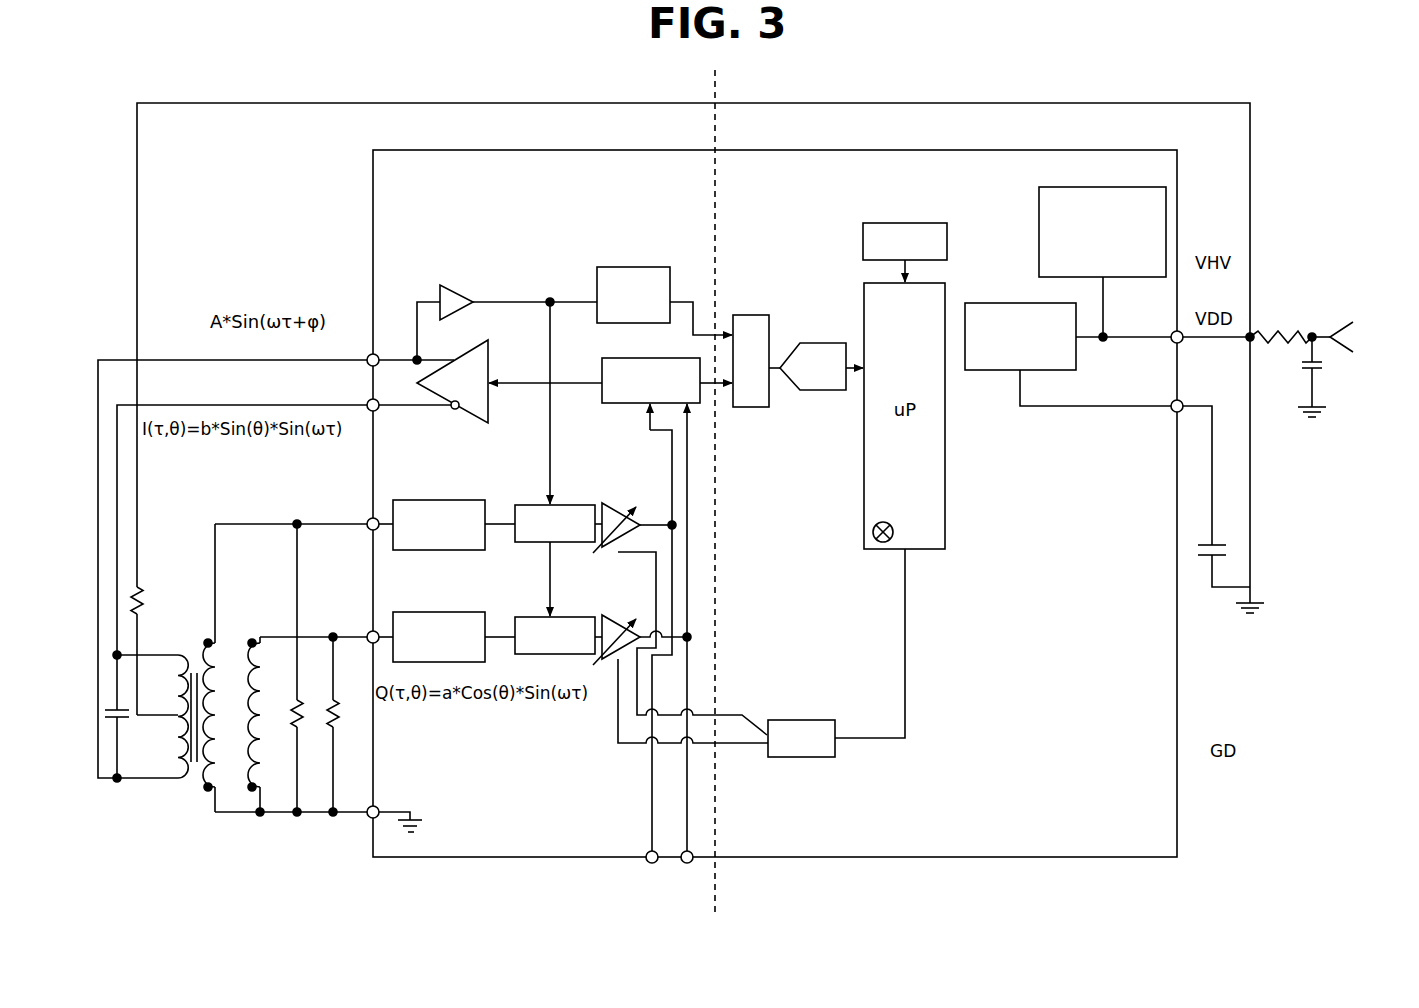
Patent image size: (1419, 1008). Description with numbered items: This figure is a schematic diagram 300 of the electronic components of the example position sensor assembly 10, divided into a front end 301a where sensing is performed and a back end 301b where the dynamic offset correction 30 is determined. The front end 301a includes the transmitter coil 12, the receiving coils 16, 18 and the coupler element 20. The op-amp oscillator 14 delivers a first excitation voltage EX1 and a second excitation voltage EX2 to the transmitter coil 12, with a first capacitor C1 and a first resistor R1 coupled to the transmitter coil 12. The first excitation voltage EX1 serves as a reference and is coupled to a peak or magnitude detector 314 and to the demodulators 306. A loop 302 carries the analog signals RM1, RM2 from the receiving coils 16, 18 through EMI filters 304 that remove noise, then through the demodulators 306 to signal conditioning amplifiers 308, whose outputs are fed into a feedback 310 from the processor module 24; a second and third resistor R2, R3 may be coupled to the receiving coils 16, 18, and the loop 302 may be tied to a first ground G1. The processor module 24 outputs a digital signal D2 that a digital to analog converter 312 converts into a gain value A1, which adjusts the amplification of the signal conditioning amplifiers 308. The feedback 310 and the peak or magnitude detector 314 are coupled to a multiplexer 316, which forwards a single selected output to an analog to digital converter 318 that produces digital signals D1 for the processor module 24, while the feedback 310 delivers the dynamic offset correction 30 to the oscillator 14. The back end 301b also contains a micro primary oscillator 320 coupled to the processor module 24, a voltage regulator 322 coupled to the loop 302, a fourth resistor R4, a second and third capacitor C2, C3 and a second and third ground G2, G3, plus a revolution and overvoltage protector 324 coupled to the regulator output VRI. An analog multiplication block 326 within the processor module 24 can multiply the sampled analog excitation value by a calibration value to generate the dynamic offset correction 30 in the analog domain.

The schematic diagram 300 is at (218, 62).
The position sensor assembly 10 is at (158, 864).
The transmitter coil 12 is at (180, 750).
The op-amp oscillator 14 is at (491, 357).
The first receiving coil 16 is at (219, 736).
The second receiving coil 18 is at (259, 756).
The coupler element 20 is at (195, 766).
The processor module 24 is at (1014, 552).
The dynamic offset correction 30 is at (572, 386).
The front end 301a is at (586, 901).
The back end 301b is at (998, 898).
The loop 302 is at (320, 862).
The electromagnetic interference filters 304 is at (468, 499).
The demodulators 306 is at (530, 504).
The signal conditioning amplifiers 308 is at (616, 503).
The feedback 310 is at (629, 357).
The digital to analog converter 312 is at (803, 758).
The peak or magnitude detector 314 is at (636, 266).
The multiplexer 316 is at (746, 315).
The analog to digital converter 318 is at (806, 343).
The micro primary oscillator 320 is at (913, 222).
The voltage regulator 322 is at (1018, 302).
The revolution and overvoltage protector 324 is at (1059, 186).
The analog multiplication block 326 is at (872, 532).
The first excitation voltage EX1 is at (287, 362).
The second excitation voltage EX2 is at (287, 407).
The analog signal from first receiving coil RM1 is at (342, 522).
The analog signal from second receiving coil RM2 is at (352, 633).
The first resistor R1 is at (300, 722).
The second resistor R2 is at (336, 722).
The third resistor R3 is at (145, 596).
The fourth resistor R4 is at (1281, 330).
The first capacitor C1 is at (120, 718).
The second capacitor C2 is at (1205, 558).
The third capacitor C3 is at (1305, 369).
The first ground G1 is at (420, 826).
The second ground G2 is at (1256, 600).
The third ground G3 is at (1319, 406).
The gain value A1 is at (704, 719).
The digital signals D1 is at (855, 373).
The digital signal D2 is at (903, 638).
The output of the voltage regulator VRI is at (1085, 338).